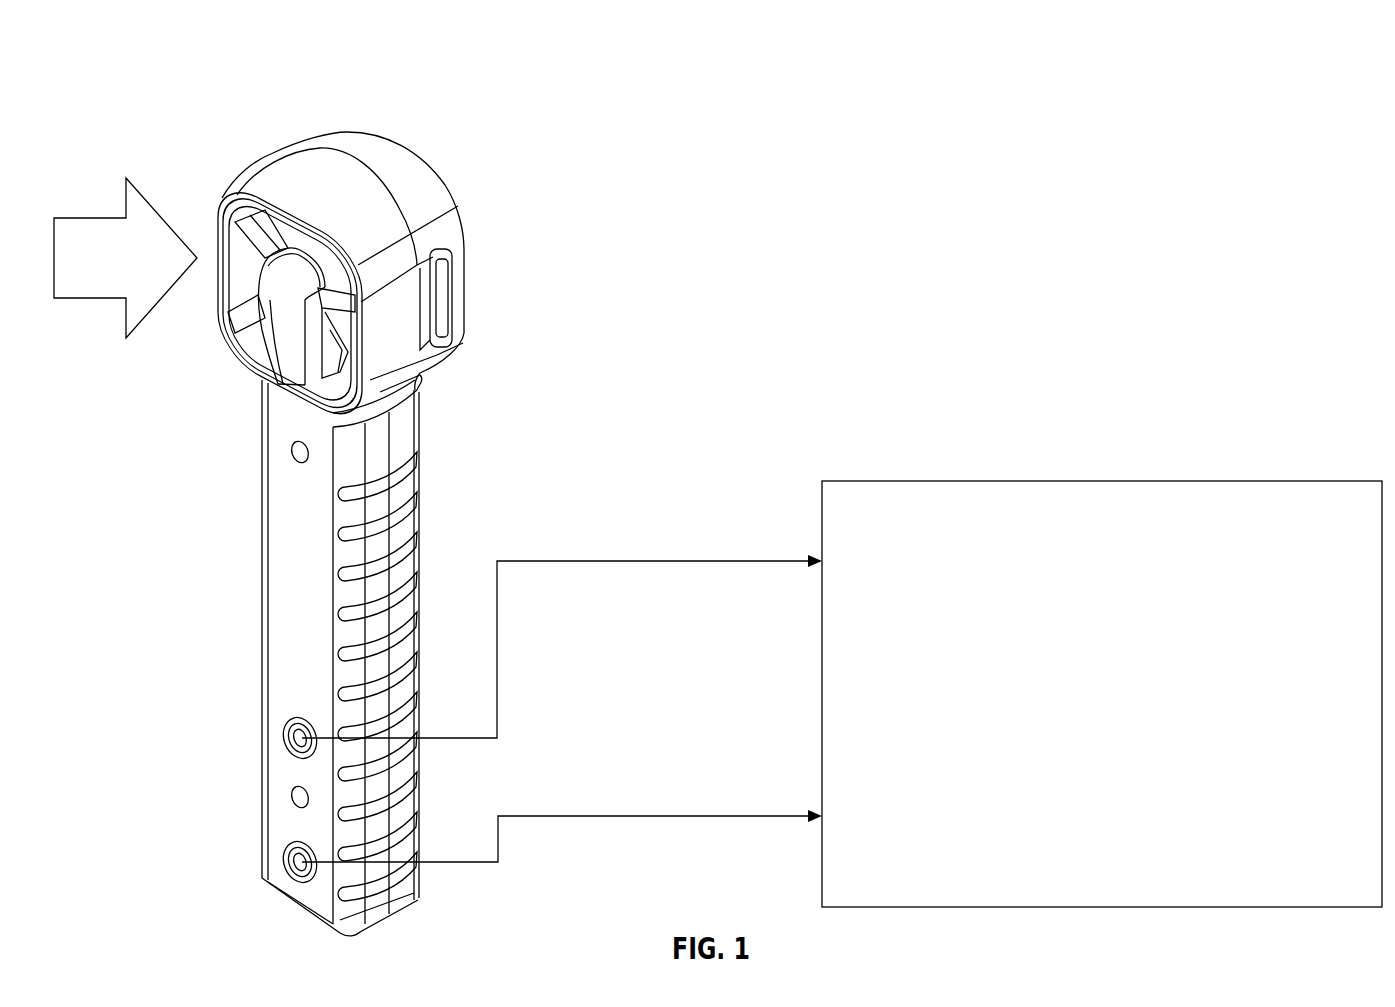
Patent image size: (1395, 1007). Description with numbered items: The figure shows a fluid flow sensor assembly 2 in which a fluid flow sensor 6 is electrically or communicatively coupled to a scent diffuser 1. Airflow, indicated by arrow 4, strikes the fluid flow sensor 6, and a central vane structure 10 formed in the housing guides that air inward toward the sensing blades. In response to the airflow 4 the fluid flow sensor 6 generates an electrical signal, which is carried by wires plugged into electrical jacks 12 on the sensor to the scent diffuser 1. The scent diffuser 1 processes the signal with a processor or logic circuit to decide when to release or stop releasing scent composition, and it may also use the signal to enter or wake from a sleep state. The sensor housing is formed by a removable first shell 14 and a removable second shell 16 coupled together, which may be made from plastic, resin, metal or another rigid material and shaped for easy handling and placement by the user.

The scent diffuser 1 is at (985, 481).
The fluid flow sensor assembly 2 is at (863, 200).
The airflow 4 is at (100, 290).
The fluid flow sensor 6 is at (278, 88).
The central vane structure 10 is at (280, 350).
The electrical jacks 12 is at (282, 739).
The removable first shell 14 is at (428, 470).
The removable second shell 16 is at (262, 553).